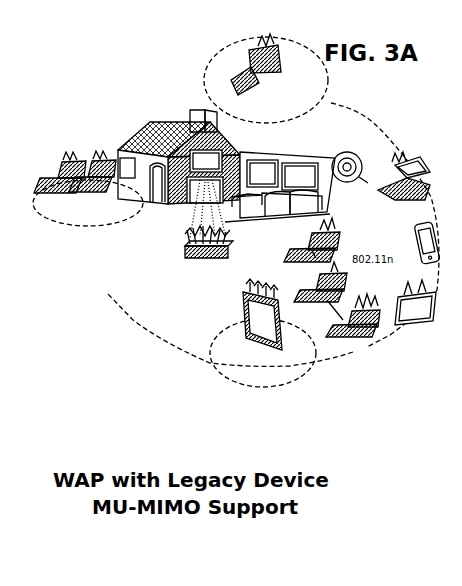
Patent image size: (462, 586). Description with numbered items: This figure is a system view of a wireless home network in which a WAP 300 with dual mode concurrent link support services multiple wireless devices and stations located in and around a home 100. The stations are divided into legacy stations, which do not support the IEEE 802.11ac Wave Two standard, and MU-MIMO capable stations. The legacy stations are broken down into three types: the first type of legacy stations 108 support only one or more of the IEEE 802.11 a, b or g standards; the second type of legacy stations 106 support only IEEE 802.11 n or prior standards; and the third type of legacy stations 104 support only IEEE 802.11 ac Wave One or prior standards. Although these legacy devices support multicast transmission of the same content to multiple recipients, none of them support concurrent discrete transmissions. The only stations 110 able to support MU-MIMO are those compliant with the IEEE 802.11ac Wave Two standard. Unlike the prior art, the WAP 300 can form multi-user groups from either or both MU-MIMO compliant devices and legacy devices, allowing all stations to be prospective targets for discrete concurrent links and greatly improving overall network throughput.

The home 100 is at (177, 124).
The third type of legacy stations 104 is at (254, 378).
The second type of legacy stations 106 is at (388, 333).
The first type of legacy stations 108 is at (328, 77).
The MU-MIMO compliant stations 110 is at (67, 216).
The WAP with dual mode concurrent link support 300 is at (184, 253).